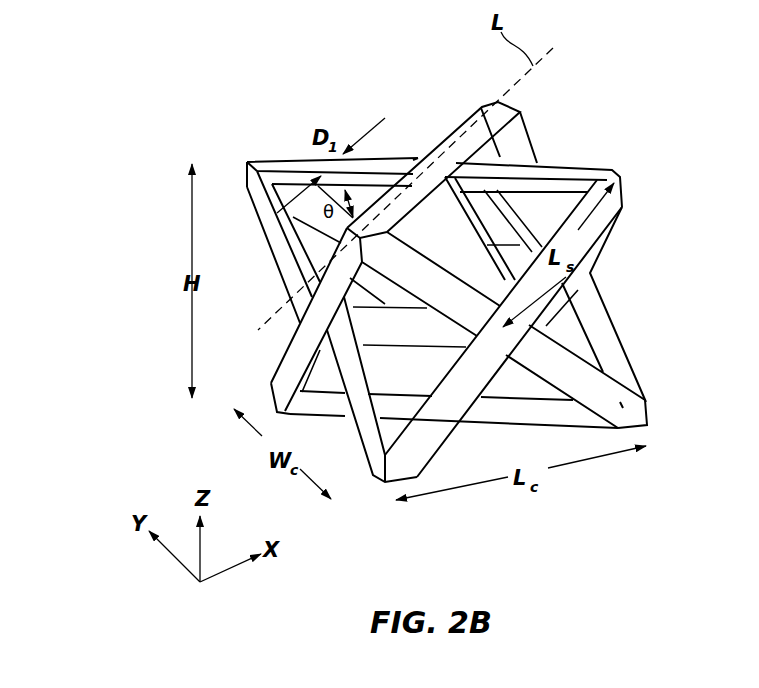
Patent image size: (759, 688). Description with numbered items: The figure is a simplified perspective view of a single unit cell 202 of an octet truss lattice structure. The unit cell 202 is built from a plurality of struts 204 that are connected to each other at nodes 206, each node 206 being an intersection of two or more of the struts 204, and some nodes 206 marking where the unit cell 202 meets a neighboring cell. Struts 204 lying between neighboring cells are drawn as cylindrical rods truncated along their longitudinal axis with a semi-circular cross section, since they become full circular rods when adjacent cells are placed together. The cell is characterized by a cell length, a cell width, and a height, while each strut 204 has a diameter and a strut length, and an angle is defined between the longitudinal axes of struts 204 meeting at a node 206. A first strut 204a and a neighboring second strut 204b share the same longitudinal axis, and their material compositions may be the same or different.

The unit cell 202 is at (254, 101).
The strut 204 is at (338, 272).
The first strut 204a is at (406, 209).
The second strut 204b is at (488, 129).
The node 206 is at (418, 160).